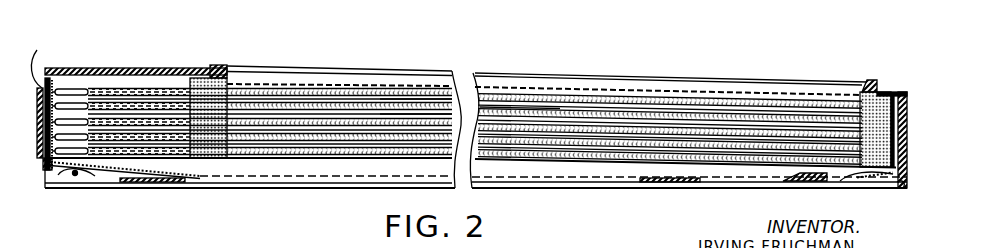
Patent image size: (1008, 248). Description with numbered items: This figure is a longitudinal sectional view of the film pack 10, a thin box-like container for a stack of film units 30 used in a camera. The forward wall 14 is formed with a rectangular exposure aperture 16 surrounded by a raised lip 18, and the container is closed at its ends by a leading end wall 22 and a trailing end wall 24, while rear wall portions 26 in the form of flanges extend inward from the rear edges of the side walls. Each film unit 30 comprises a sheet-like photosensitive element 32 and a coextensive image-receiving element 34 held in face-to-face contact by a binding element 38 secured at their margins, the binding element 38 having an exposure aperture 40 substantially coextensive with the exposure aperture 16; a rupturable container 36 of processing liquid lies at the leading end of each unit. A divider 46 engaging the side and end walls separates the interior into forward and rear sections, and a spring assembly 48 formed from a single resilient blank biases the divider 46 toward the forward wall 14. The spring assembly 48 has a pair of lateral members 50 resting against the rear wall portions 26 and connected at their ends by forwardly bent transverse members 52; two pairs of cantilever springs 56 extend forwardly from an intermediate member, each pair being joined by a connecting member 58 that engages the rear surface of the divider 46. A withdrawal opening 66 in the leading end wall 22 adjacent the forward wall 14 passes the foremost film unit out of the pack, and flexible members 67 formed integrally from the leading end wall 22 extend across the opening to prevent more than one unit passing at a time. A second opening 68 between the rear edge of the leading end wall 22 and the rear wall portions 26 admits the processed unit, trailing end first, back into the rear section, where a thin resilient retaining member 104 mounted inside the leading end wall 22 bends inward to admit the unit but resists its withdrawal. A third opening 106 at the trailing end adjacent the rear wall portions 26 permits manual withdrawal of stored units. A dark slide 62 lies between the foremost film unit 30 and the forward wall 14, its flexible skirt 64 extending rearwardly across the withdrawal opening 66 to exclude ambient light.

The film pack 10 is at (600, 74).
The forward wall 14 is at (127, 70).
The exposure aperture 16 is at (230, 72).
The raised lip 18 is at (217, 66).
The leading end wall 22 is at (42, 158).
The trailing end wall 24 is at (910, 125).
The rear wall portions 26 is at (197, 188).
The film unit 30 is at (376, 121).
The photosensitive element 32 is at (504, 117).
The image-receiving element 34 is at (397, 108).
The rupturable container 36 is at (167, 103).
The binding element 38 is at (200, 78).
The exposure aperture 40 is at (271, 83).
The divider 46 is at (348, 163).
The spring assembly 48 is at (682, 182).
The lateral members 50 is at (282, 178).
The transverse members 52 is at (108, 171).
The cantilever springs 56 is at (575, 179).
The connecting member 58 is at (798, 182).
The dark slide 62 is at (660, 88).
The skirt 64 is at (72, 88).
The withdrawal opening 66 is at (53, 84).
The flexible members 67 is at (37, 60).
The second opening 68 is at (45, 164).
The retaining member 104 is at (75, 176).
The third opening 106 is at (904, 183).